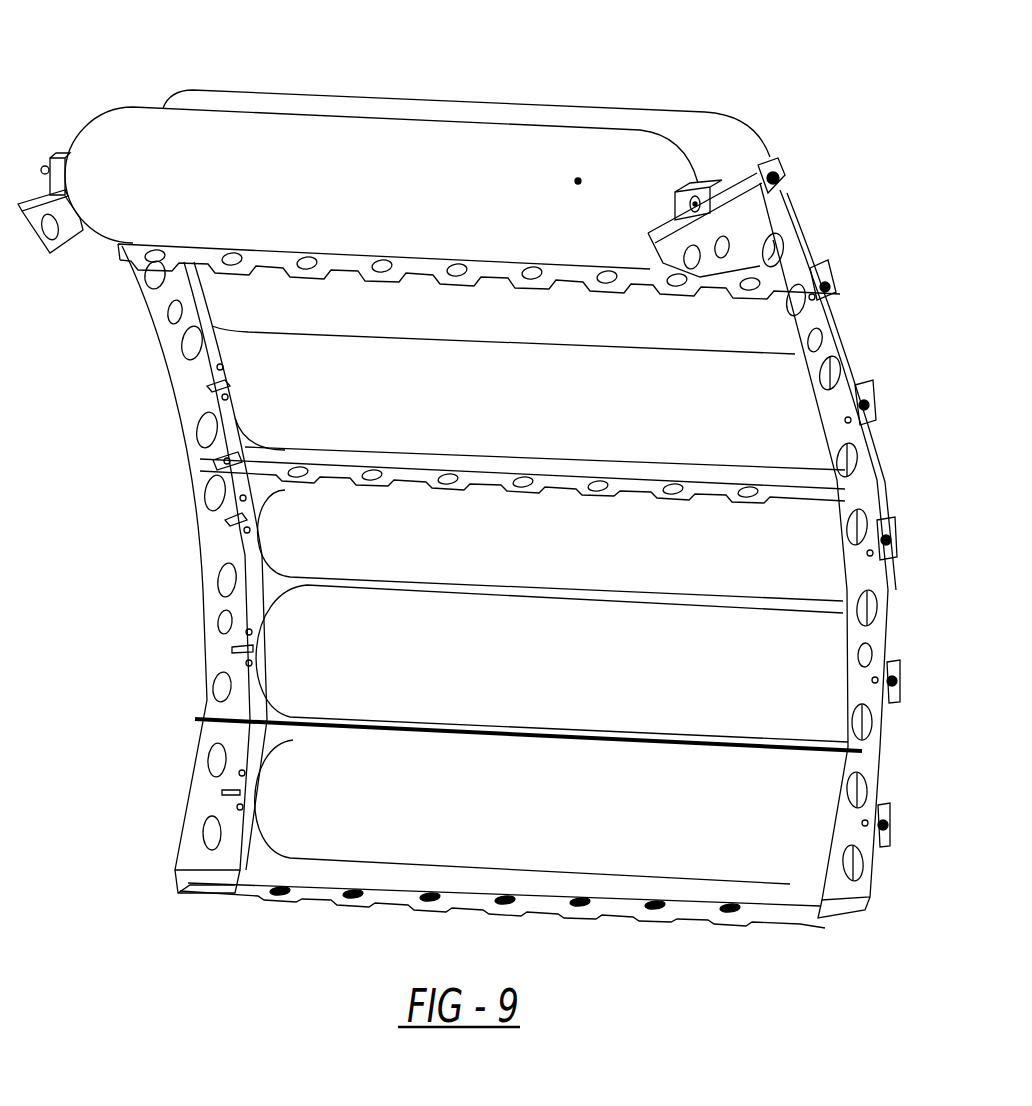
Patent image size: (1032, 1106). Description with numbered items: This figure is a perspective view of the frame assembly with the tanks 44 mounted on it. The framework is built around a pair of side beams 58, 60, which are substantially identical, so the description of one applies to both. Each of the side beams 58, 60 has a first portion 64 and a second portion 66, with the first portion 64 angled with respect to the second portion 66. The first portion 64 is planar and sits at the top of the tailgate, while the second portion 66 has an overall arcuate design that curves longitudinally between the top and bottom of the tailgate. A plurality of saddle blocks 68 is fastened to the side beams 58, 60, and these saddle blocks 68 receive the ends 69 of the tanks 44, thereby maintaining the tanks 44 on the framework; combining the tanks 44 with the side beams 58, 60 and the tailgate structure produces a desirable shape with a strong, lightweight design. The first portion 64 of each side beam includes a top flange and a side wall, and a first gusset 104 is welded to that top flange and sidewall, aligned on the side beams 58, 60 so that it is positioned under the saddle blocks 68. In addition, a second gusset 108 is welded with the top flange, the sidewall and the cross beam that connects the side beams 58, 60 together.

The tanks 44 is at (396, 190).
The side beam 58 is at (878, 462).
The side beam 60 is at (140, 316).
The first portion 64 is at (63, 236).
The second portion 66 is at (200, 551).
The saddle blocks 68 is at (700, 187).
The ends 69 is at (775, 182).
The first gusset 104 is at (212, 385).
The second gusset 108 is at (235, 465).